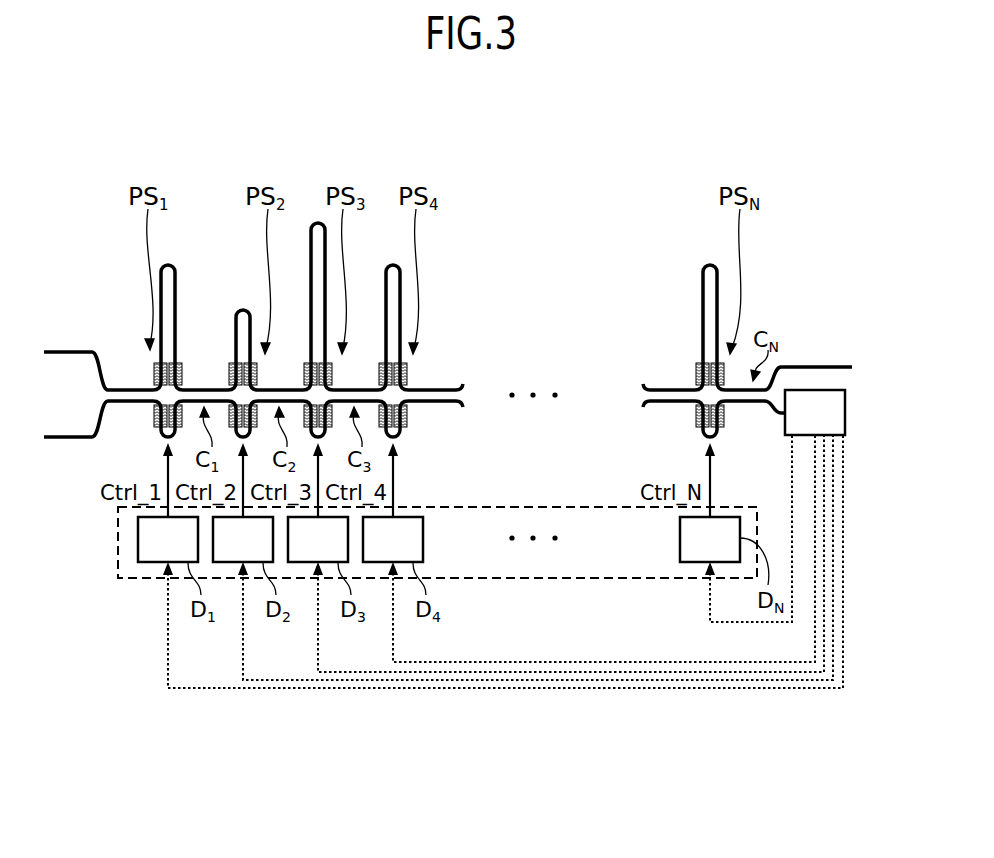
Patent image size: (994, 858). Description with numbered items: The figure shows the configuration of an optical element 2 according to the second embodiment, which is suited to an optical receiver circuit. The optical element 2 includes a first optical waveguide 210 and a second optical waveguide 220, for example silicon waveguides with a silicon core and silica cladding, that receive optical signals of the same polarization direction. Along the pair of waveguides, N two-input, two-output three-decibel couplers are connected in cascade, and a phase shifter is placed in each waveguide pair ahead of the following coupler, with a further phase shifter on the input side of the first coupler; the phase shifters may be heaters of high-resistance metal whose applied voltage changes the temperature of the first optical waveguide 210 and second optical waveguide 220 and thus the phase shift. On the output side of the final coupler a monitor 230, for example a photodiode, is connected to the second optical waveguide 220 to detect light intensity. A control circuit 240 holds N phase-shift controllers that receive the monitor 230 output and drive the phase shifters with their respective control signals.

The optical element 2 is at (684, 140).
The first optical waveguide 210 is at (68, 350).
The second optical waveguide 220 is at (68, 440).
The monitor 230 is at (846, 412).
The control circuit 240 is at (128, 580).